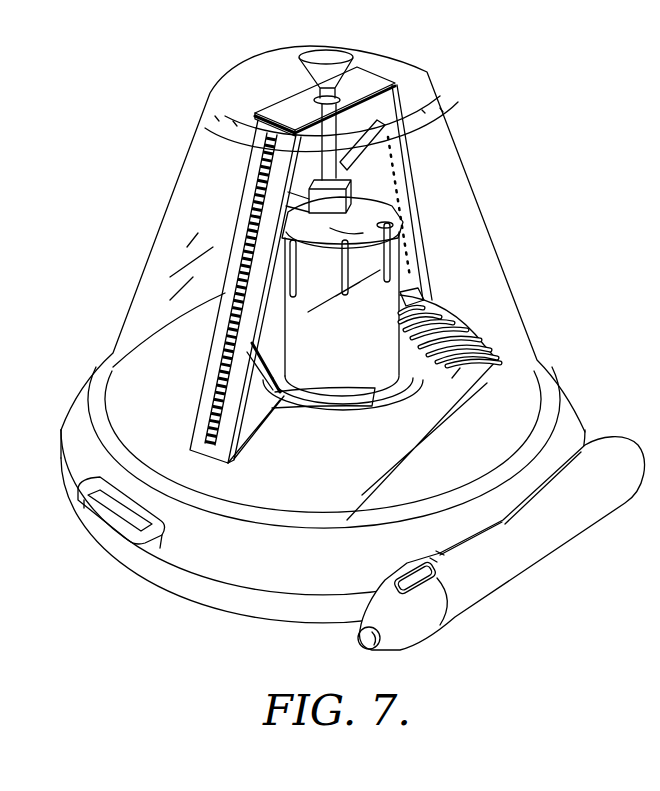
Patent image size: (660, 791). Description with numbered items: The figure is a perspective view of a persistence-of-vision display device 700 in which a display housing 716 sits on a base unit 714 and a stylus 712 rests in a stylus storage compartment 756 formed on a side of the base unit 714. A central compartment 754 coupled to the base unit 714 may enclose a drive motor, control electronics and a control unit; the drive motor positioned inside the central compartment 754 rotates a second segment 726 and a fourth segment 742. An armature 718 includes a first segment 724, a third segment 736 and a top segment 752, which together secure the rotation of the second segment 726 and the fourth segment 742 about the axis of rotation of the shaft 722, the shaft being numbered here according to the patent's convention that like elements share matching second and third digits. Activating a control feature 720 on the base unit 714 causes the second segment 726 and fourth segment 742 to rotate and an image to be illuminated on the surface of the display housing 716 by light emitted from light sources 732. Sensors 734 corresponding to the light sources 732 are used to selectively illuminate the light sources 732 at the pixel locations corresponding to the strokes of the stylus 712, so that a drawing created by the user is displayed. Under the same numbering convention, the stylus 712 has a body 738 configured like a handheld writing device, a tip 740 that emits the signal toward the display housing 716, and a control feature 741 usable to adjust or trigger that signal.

The display device 700 is at (82, 92).
The stylus 712 is at (523, 563).
The base unit 714 is at (68, 412).
The display housing 716 is at (457, 140).
The armature 718 is at (276, 422).
The control feature 720 is at (98, 518).
The funnel inlet 722 is at (326, 47).
The first segment 724 is at (242, 453).
The second segment 726 is at (205, 373).
The light sources 732 is at (233, 300).
The sensors 734 is at (393, 172).
The third segment 736 is at (426, 299).
The handle top surface 738 is at (519, 503).
The nozzle tip 740 is at (358, 645).
The button 741 is at (440, 574).
The fourth segment 742 is at (418, 220).
The top segment 752 is at (295, 110).
The central compartment 754 is at (357, 387).
The stylus storage compartment 756 is at (405, 558).